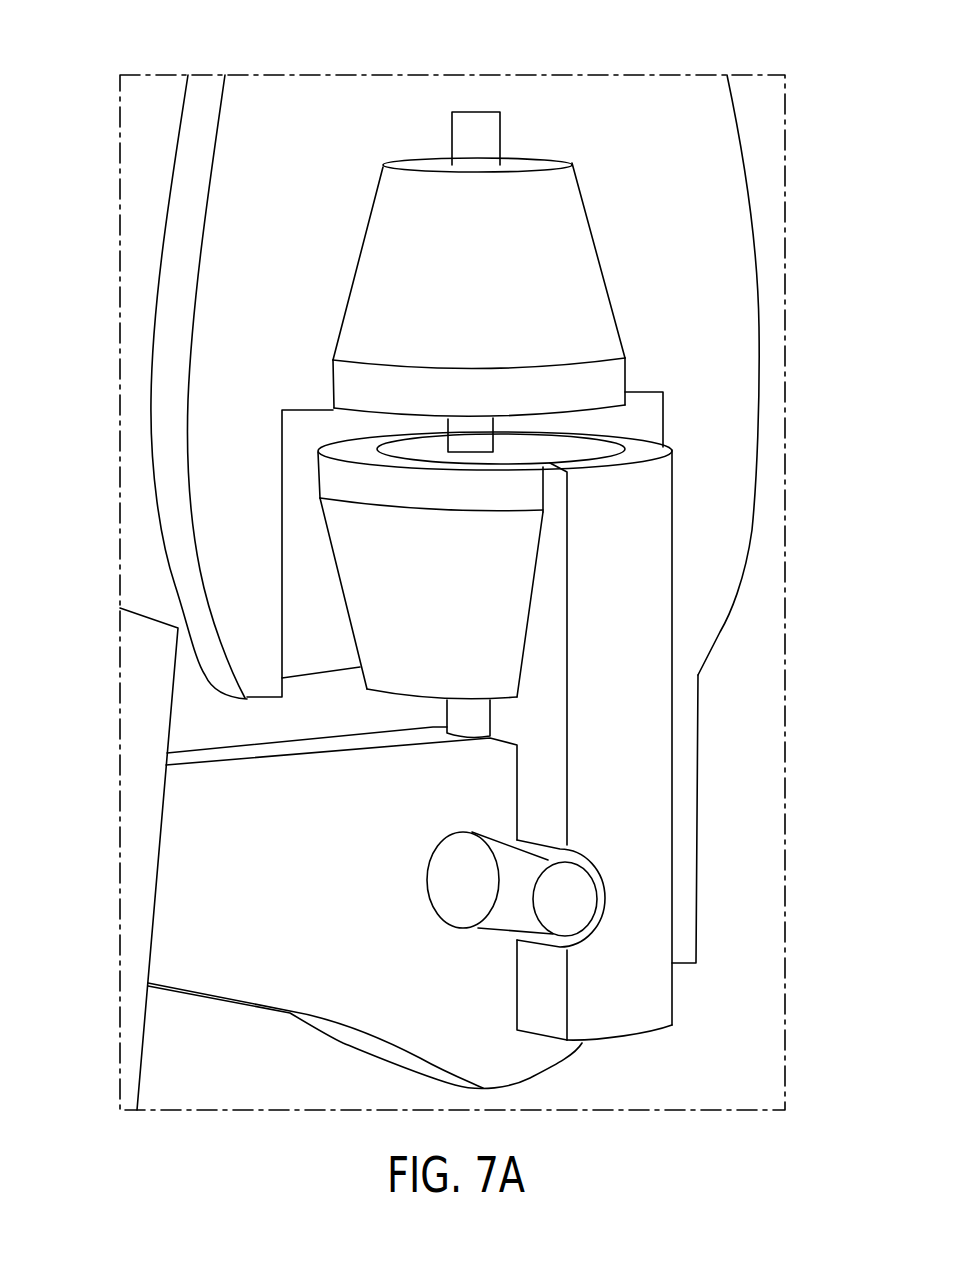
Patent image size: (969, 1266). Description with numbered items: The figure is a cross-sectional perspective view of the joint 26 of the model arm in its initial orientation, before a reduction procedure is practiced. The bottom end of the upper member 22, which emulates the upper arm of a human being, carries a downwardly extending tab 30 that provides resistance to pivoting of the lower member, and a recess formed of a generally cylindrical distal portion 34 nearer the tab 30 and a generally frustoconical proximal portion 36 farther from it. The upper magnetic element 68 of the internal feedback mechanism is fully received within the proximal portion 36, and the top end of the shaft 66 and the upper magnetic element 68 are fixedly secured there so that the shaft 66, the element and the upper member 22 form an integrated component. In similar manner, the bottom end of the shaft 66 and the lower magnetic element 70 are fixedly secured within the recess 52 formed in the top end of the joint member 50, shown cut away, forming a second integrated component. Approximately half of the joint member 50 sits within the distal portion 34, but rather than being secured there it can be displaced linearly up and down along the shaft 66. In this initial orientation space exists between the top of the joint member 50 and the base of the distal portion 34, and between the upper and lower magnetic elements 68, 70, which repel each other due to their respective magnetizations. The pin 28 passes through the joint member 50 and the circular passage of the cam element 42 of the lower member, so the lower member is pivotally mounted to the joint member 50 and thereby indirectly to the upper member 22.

The upper member 22 is at (728, 365).
The joint 26 is at (804, 827).
The pin 28 is at (452, 865).
The tab 30 is at (683, 838).
The distal portion 34 is at (303, 530).
The proximal portion 36 is at (377, 227).
The cam element 42 is at (262, 988).
The joint member 50 is at (662, 1002).
The recess 52 is at (523, 657).
The shaft 66 is at (485, 132).
The upper magnetic element 68 is at (580, 275).
The lower magnetic element 70 is at (512, 532).